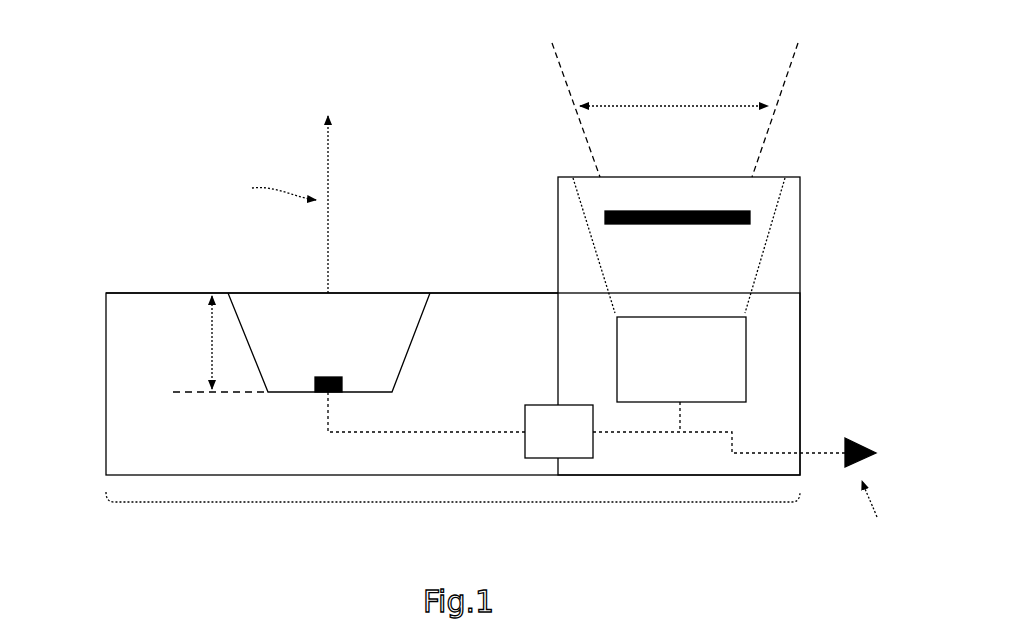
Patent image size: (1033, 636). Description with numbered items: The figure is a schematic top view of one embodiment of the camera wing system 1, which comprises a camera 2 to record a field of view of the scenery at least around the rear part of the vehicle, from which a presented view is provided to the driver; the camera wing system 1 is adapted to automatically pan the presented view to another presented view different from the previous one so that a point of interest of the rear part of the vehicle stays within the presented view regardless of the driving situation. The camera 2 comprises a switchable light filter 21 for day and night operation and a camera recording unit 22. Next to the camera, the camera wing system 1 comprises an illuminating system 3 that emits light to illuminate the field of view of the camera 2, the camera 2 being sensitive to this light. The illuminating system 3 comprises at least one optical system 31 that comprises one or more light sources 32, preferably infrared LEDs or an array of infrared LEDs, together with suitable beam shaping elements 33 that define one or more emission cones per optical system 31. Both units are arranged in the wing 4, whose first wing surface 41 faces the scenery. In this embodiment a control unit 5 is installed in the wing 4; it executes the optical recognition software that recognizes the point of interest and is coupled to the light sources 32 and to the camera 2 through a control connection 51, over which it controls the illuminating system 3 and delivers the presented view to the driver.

The camera wing system 1 is at (140, 106).
The camera 2 is at (809, 330).
The illuminating system 3 is at (98, 383).
The wing 4 is at (452, 502).
The control unit 5 is at (559, 431).
The switchable light filter 21 is at (690, 233).
The camera recording unit 22 is at (681, 359).
The optical system 31 is at (192, 342).
The light sources 32 is at (329, 368).
The beam shaping elements 33 is at (423, 343).
The first wing surface 41 is at (452, 268).
The control connection 51 is at (485, 424).